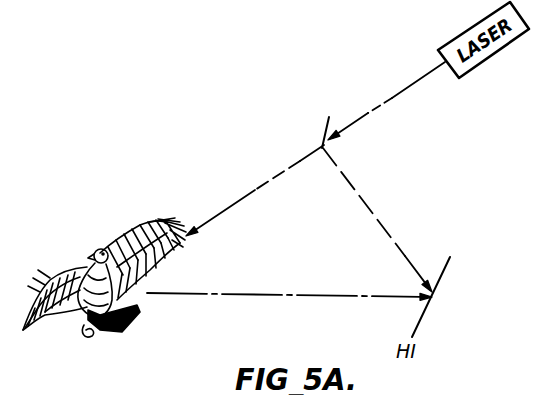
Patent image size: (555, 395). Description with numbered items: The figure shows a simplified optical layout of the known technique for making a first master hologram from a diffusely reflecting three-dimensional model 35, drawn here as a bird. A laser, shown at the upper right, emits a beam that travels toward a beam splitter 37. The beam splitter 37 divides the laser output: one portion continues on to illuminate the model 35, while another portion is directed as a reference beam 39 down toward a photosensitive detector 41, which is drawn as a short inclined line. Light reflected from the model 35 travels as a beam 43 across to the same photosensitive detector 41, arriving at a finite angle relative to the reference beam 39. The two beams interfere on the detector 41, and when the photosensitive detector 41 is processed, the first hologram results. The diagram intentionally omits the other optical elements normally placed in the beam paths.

The three-dimensional model 35 is at (74, 312).
The beam splitter 37 is at (325, 153).
The reference beam 39 is at (386, 229).
The photosensitive detector 41 is at (443, 269).
The reflected beam 43 is at (333, 297).